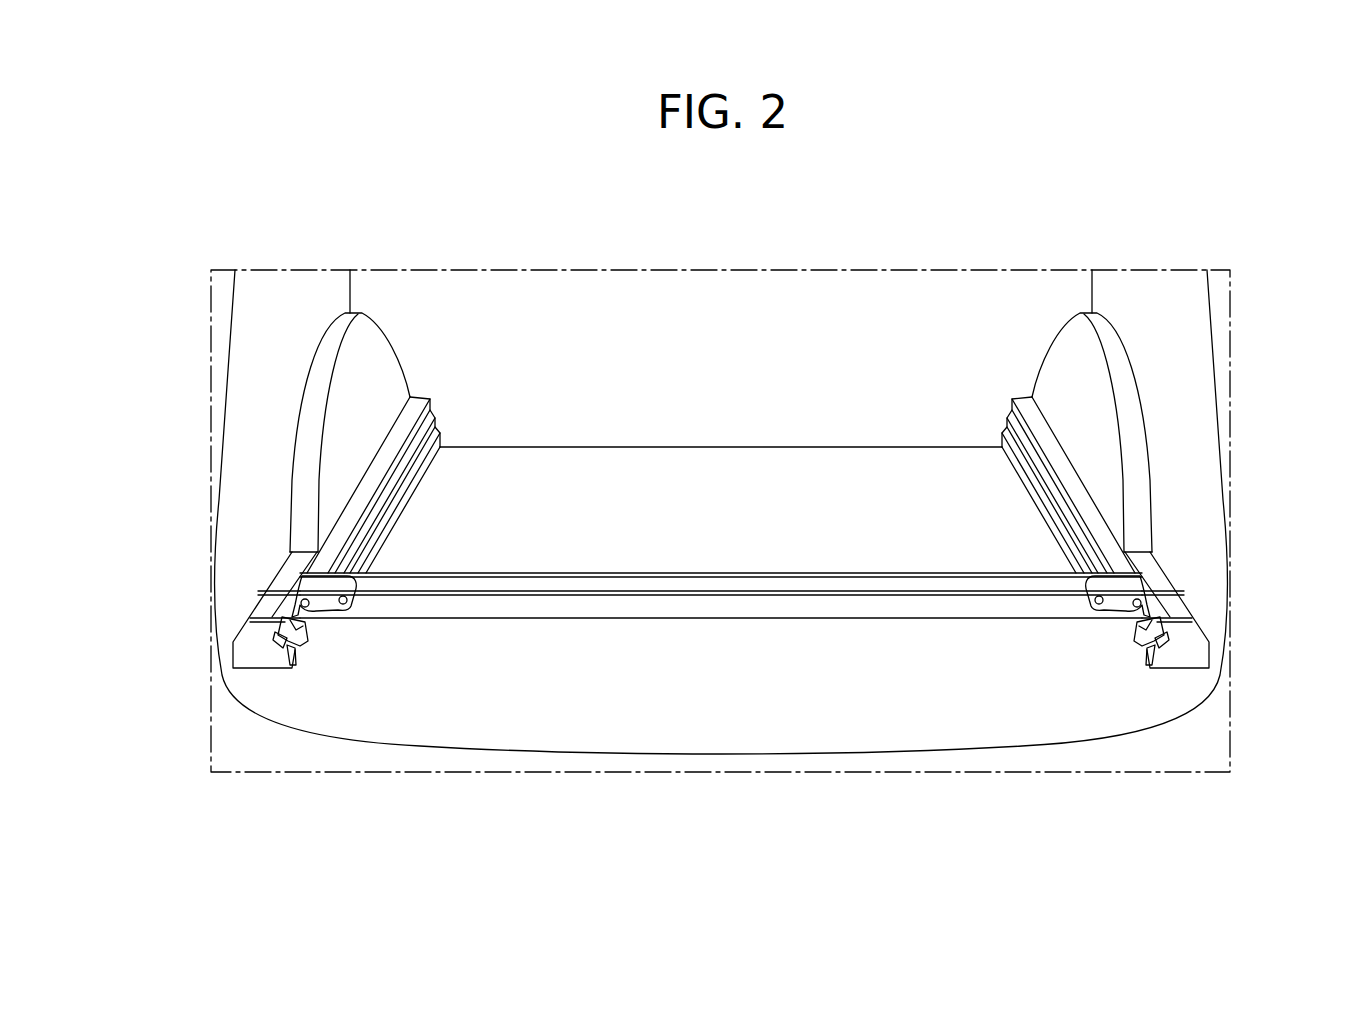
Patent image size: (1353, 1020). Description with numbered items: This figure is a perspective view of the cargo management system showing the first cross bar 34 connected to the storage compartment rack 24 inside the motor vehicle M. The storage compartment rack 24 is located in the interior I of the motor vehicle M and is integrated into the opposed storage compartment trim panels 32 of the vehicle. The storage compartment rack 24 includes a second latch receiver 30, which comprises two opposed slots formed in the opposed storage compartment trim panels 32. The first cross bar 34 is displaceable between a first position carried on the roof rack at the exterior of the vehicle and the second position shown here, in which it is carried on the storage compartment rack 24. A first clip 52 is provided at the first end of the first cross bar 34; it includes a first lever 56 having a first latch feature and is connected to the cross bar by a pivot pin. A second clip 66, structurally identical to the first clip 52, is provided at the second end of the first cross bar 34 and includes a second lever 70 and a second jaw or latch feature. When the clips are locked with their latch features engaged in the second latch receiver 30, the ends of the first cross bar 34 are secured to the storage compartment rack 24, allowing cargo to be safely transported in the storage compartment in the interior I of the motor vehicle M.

The interior I is at (770, 315).
The motor vehicle M is at (1192, 325).
The storage compartment rack 24 is at (1182, 575).
The second latch receiver 30 is at (1157, 627).
The storage compartment trim panels 32 is at (380, 507).
The first cross bar 34 is at (766, 572).
The first clip 52 is at (270, 540).
The first lever 56 is at (325, 583).
The second clip 66 is at (1160, 572).
The second lever 70 is at (1103, 580).